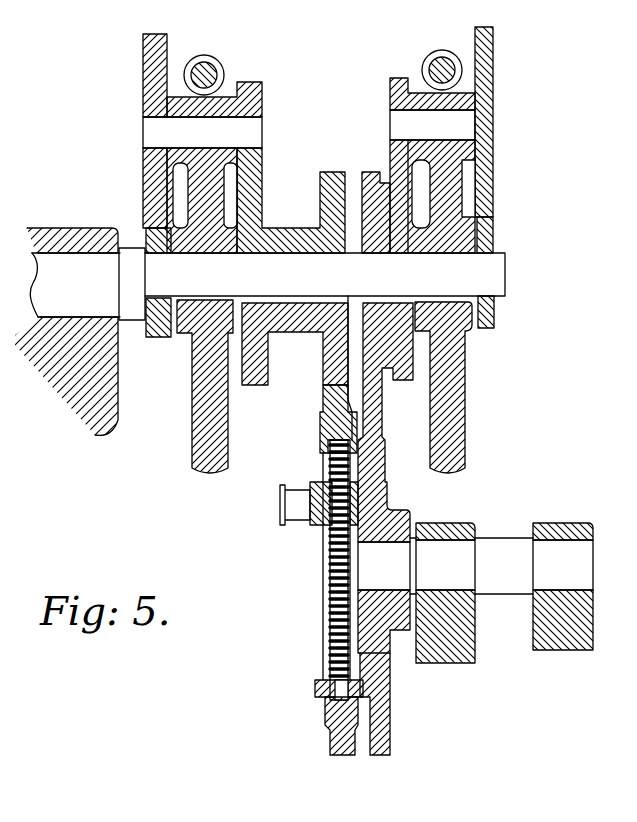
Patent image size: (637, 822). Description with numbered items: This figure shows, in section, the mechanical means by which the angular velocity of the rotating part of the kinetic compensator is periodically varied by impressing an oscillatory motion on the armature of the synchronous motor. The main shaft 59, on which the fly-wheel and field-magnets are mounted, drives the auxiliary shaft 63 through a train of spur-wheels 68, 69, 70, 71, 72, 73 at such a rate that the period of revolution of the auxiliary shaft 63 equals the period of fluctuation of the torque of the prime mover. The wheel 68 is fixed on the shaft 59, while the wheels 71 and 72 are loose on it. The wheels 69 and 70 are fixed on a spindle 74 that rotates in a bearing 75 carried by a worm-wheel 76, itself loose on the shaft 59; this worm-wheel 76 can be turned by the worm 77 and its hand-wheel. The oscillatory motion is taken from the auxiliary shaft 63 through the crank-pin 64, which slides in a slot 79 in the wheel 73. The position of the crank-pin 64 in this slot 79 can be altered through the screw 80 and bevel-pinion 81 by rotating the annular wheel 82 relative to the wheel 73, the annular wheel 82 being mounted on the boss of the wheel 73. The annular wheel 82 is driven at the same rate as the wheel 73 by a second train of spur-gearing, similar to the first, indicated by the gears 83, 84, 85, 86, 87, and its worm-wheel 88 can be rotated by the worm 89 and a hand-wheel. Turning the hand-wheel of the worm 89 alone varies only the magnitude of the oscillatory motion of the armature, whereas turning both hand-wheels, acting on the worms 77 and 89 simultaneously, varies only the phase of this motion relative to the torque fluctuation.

The shaft 59 is at (267, 285).
The auxiliary shaft 63 is at (495, 540).
The crank-pin 64 is at (280, 504).
The spur-wheel 68 is at (158, 340).
The spur-wheel 69 is at (152, 190).
The spur-wheel 70 is at (264, 157).
The spur-wheel 71 is at (258, 200).
The spur-wheel 72 is at (323, 358).
The spur-wheel 73 is at (334, 428).
The spindle 74 is at (150, 127).
The bearing 75 is at (248, 108).
The worm-wheel 76 is at (205, 408).
The worm 77 is at (208, 66).
The slot 79 is at (327, 553).
The screw 80 is at (340, 620).
The bevel-pinion 81 is at (318, 692).
The annular wheel 82 is at (378, 434).
The spur-gear 83 is at (497, 316).
The spur-gear 84 is at (496, 176).
The spur-gear 85 is at (392, 146).
The spur-gear 86 is at (408, 198).
The spur-gear 87 is at (374, 372).
The worm-wheel 88 is at (455, 383).
The worm 89 is at (433, 53).